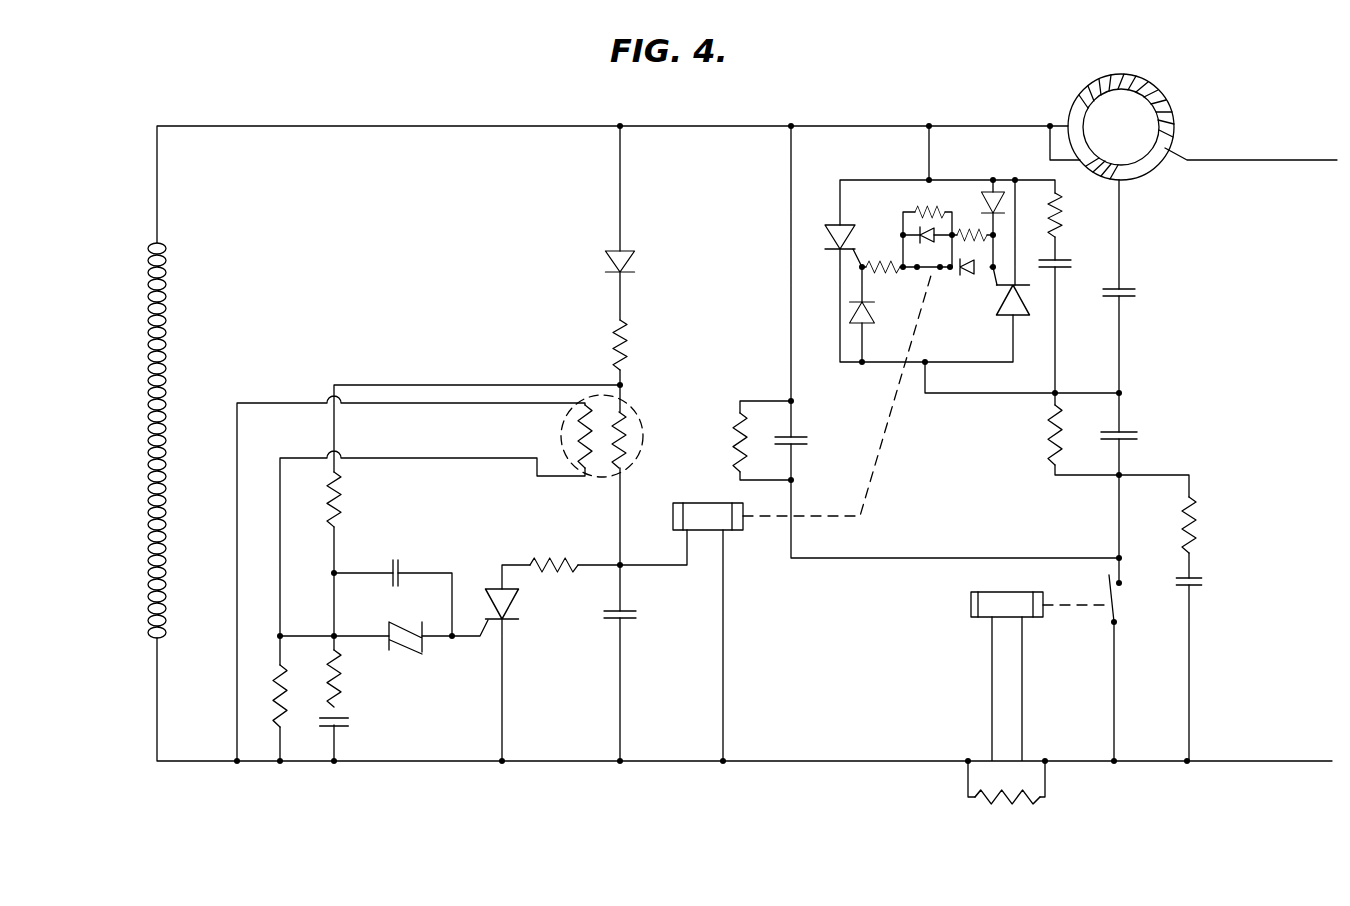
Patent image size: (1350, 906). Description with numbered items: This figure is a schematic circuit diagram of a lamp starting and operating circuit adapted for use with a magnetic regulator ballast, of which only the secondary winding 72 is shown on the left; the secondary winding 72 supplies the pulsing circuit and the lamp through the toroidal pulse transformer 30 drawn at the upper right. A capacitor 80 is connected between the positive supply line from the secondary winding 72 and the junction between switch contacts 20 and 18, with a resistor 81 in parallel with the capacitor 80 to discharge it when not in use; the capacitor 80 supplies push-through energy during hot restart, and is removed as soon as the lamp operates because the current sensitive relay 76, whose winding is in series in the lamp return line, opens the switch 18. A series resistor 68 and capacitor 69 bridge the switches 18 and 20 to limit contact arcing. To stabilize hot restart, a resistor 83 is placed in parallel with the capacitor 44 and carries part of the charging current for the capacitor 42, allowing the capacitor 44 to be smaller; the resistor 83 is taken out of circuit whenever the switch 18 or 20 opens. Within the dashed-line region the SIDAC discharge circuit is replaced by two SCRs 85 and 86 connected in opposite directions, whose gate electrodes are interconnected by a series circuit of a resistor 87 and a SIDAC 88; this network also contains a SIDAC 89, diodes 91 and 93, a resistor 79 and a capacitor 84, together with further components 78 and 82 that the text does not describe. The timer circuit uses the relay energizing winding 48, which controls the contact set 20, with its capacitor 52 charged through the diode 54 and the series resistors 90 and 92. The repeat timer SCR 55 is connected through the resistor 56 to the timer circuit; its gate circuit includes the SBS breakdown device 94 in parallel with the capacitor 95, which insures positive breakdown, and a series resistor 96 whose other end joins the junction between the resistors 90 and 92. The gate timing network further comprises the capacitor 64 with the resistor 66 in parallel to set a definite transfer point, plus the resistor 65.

The secondary winding 72 is at (168, 282).
The semiconductor diode 54 is at (607, 262).
The resistor 90 is at (627, 331).
The resistor 92 is at (630, 405).
The series resistor 96 is at (341, 498).
The capacitor 95 is at (401, 560).
The resistor 56 is at (552, 558).
The SCR 55 is at (516, 602).
The energizing winding 48 is at (680, 503).
The capacitor 52 is at (606, 615).
The resistor 81 is at (734, 430).
The capacitor 80 is at (800, 437).
The SCR 85 is at (825, 236).
The resistor 78 is at (920, 210).
The resistor 82 is at (968, 234).
The SIDAC 89 is at (922, 242).
The resistor 87 is at (886, 272).
The SIDAC 88 is at (963, 274).
The diode 91 is at (850, 306).
The diode 93 is at (996, 190).
The SCR 86 is at (1020, 315).
The switch 20 is at (935, 280).
The resistor 79 is at (1063, 216).
The capacitor 84 is at (1065, 262).
The capacitor 42 is at (1135, 290).
The resistor 83 is at (1047, 436).
The capacitor 44 is at (1137, 433).
The resistor 68 is at (1197, 520).
The capacitor 69 is at (1203, 578).
The switch 18 is at (1124, 604).
The current sensitive relay 76 is at (971, 603).
The resistor 66 is at (288, 686).
The resistor 65 is at (341, 676).
The capacitor 64 is at (345, 728).
The SBS breakdown device 94 is at (414, 650).
The pulse transformer 30 is at (1197, 102).